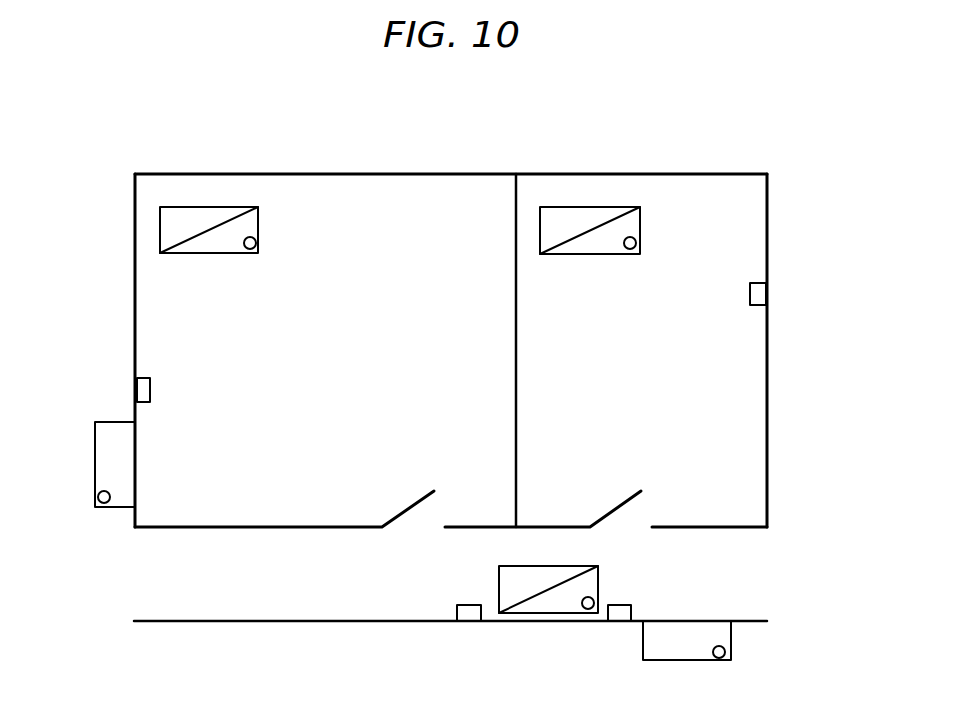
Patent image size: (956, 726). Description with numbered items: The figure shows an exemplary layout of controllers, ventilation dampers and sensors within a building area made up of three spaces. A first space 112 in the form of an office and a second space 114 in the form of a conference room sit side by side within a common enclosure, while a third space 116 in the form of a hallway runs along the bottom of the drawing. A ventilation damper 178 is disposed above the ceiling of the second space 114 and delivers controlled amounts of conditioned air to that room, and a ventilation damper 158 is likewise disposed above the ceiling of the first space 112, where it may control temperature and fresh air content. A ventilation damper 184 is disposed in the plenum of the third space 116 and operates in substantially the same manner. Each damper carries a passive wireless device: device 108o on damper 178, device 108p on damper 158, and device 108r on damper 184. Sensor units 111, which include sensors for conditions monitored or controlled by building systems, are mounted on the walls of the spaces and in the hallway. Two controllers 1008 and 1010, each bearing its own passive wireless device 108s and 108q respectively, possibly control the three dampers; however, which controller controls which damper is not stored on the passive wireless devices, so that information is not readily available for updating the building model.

The second space 114 is at (434, 171).
The first space 112 is at (768, 349).
The ventilation damper 178 is at (208, 256).
The passive wireless device 108o is at (258, 245).
The ventilation damper 158 is at (588, 257).
The passive wireless device 108p is at (640, 246).
The sensor unit 111 is at (750, 297).
The controller 1010 is at (120, 420).
The passive wireless device 108q is at (100, 505).
The third space 116 is at (303, 612).
The ventilation damper 184 is at (518, 615).
The passive wireless device 108r is at (585, 615).
The controller 1008 is at (684, 663).
The passive wireless device 108s is at (731, 652).